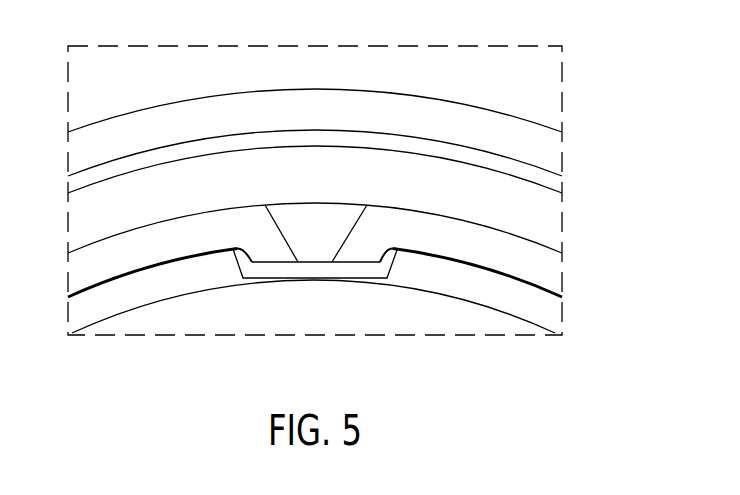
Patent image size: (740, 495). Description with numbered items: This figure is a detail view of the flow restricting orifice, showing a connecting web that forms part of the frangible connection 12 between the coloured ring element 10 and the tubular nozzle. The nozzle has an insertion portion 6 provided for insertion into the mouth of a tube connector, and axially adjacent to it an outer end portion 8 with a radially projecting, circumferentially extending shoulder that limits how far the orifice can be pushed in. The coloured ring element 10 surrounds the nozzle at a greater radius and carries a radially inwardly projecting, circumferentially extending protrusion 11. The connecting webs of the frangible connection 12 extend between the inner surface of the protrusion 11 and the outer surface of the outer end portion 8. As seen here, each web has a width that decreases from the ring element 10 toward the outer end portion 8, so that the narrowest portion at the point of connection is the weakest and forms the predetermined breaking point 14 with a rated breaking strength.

The insertion portion 6 is at (447, 320).
The outer end portion 8 is at (417, 250).
The coloured ring element 10 is at (540, 147).
The protrusion 11 is at (545, 211).
The frangible connection 12 is at (317, 242).
The predetermined breaking point 14 is at (308, 262).